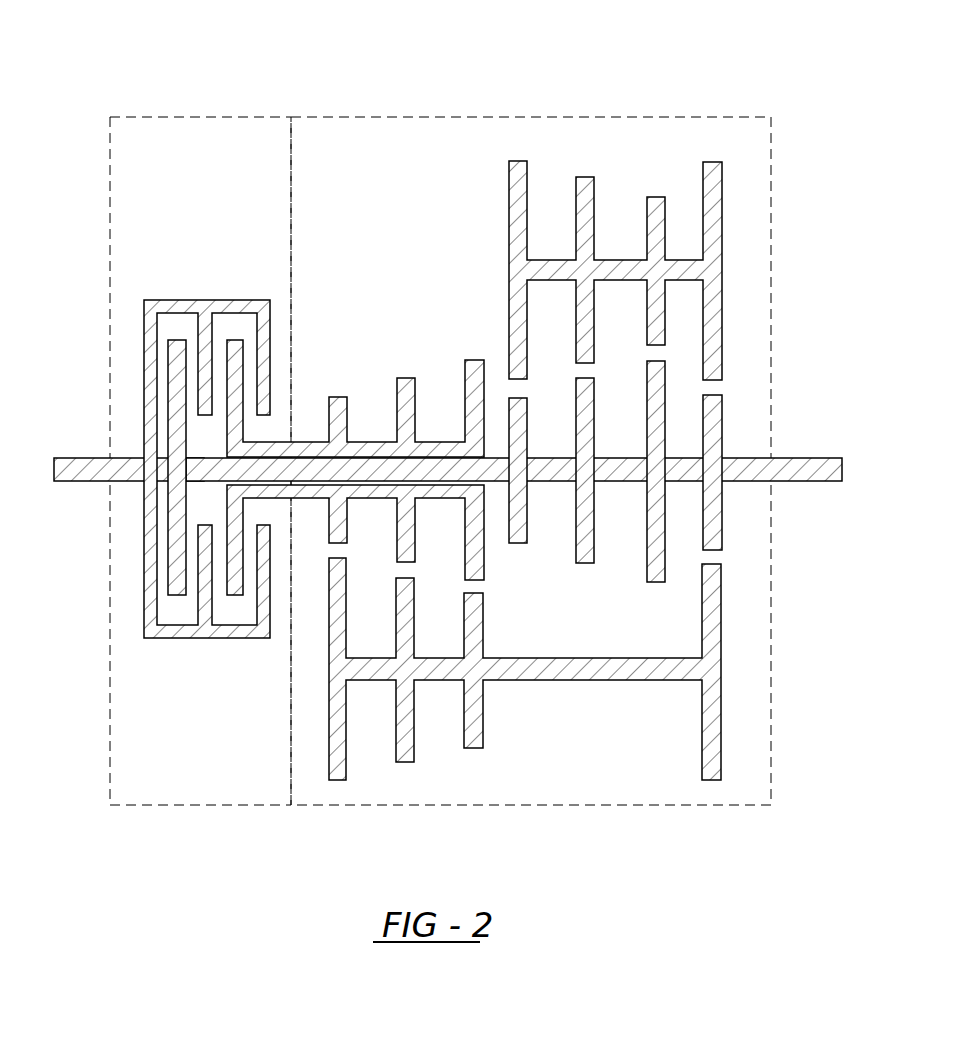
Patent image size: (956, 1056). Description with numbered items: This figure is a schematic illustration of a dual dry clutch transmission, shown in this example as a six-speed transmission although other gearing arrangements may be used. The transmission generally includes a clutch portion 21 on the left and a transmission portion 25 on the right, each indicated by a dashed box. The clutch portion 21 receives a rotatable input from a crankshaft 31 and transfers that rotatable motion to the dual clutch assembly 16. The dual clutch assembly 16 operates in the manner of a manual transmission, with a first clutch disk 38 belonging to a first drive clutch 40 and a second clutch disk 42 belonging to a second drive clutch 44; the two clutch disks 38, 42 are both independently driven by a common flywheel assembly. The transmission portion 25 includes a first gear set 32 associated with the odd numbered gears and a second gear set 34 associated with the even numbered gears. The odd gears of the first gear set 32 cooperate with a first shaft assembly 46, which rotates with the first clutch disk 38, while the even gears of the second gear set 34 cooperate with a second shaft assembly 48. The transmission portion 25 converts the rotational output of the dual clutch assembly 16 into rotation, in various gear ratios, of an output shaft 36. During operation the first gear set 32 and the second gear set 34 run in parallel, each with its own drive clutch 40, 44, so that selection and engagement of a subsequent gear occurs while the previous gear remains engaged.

The dual clutch assembly 16 is at (230, 247).
The clutch portion 21 is at (208, 117).
The transmission portion 25 is at (508, 117).
The crankshaft 31 is at (68, 458).
The first gear set 32 is at (670, 72).
The second gear set 34 is at (513, 764).
The output shaft 36 is at (812, 470).
The first clutch disk 38 is at (177, 555).
The first drive clutch 40 is at (162, 645).
The second clutch disk 42 is at (235, 343).
The second drive clutch 44 is at (233, 647).
The first shaft assembly 46 is at (648, 597).
The second shaft assembly 48 is at (382, 340).